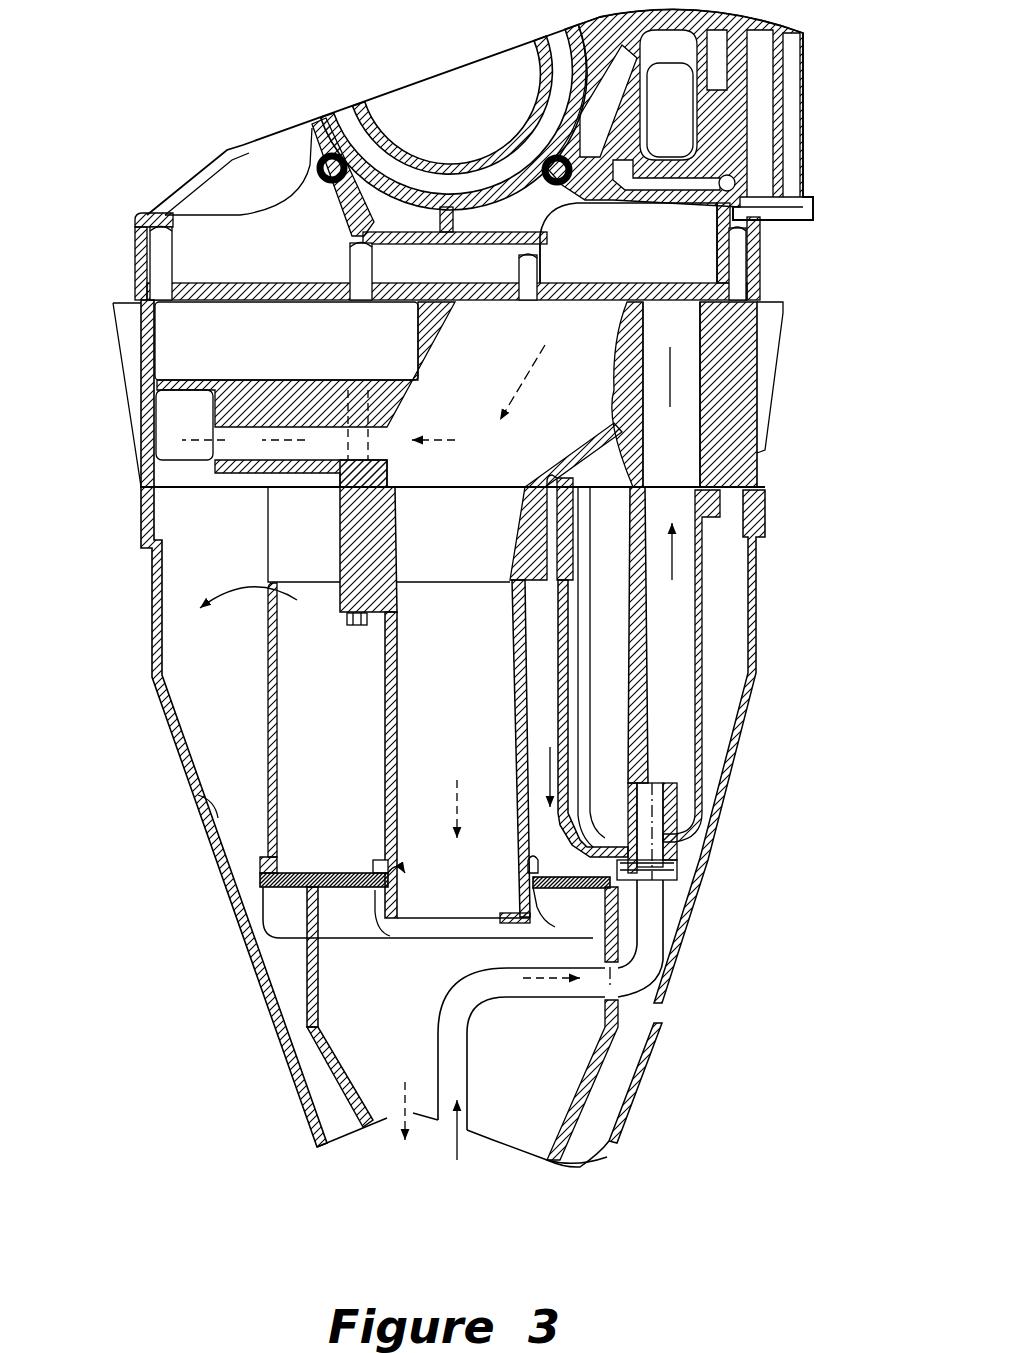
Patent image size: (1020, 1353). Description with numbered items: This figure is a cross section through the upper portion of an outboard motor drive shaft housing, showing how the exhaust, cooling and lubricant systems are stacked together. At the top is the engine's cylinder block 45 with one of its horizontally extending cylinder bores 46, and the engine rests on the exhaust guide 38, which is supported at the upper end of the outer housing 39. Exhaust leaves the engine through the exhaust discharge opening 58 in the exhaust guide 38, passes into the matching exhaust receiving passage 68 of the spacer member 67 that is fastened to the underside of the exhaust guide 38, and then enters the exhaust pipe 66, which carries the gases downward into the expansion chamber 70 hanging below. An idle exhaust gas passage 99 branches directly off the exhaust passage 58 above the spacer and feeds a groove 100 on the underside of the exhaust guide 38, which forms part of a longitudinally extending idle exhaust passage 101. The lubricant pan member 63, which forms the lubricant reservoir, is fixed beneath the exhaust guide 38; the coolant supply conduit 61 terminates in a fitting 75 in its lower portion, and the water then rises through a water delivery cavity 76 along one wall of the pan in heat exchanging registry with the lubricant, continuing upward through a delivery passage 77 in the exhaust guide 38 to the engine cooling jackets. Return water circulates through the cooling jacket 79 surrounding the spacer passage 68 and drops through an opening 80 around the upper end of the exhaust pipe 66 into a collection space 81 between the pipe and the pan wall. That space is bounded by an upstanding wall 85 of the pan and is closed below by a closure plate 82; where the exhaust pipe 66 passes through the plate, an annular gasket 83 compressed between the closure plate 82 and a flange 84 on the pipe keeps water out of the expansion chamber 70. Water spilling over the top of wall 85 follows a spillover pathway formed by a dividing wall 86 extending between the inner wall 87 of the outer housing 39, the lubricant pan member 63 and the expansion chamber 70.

The cylinder bore 46 is at (527, 100).
The exhaust discharge opening 58 is at (590, 300).
The cylinder block 45 is at (757, 247).
The exhaust guide 38 is at (737, 400).
The delivery passage 77 is at (690, 460).
The outer housing 39 is at (757, 617).
The cooling jacket 79 is at (530, 500).
The idle exhaust gas passage 99 is at (320, 447).
The spacer member 67 is at (340, 578).
The idle exhaust passage 101 is at (170, 467).
The groove 100 is at (207, 467).
The upstanding wall 85 is at (272, 618).
The dividing wall 86 is at (217, 707).
The inner wall 87 is at (210, 848).
The collection space 81 is at (303, 710).
The flange 84 is at (380, 853).
The closure plate 82 is at (327, 873).
The exhaust receiving passage 68 is at (443, 557).
The opening 80 is at (553, 607).
The lubricant pan member 63 is at (652, 692).
The water delivery cavity 76 is at (680, 757).
The fitting 75 is at (660, 847).
The annular gasket 83 is at (373, 900).
The exhaust pipe 66 is at (428, 900).
The expansion chamber 70 is at (323, 1067).
The supply conduit 61 is at (467, 1087).